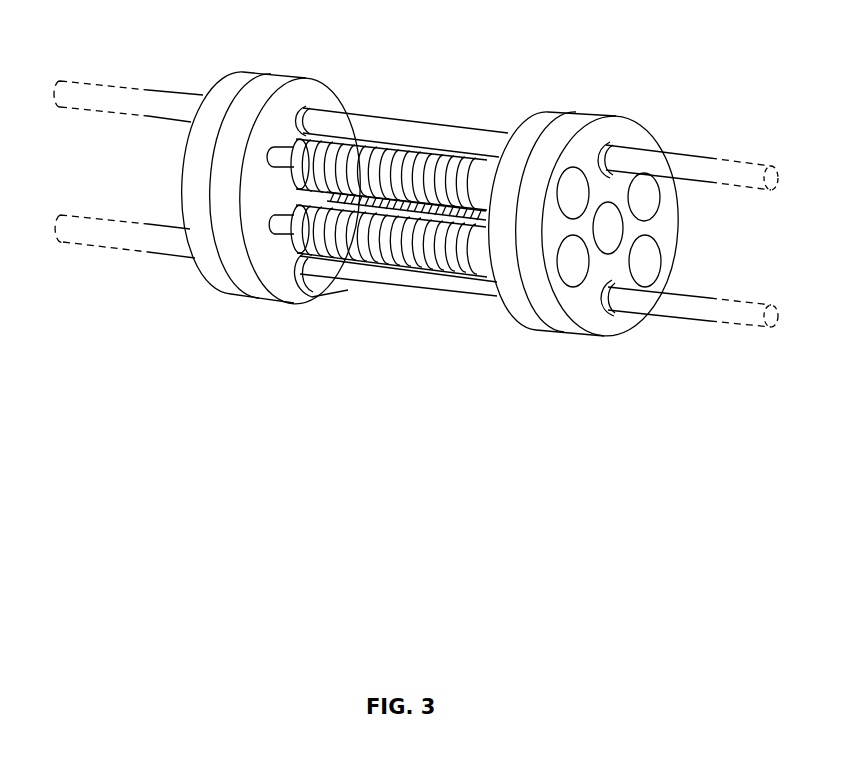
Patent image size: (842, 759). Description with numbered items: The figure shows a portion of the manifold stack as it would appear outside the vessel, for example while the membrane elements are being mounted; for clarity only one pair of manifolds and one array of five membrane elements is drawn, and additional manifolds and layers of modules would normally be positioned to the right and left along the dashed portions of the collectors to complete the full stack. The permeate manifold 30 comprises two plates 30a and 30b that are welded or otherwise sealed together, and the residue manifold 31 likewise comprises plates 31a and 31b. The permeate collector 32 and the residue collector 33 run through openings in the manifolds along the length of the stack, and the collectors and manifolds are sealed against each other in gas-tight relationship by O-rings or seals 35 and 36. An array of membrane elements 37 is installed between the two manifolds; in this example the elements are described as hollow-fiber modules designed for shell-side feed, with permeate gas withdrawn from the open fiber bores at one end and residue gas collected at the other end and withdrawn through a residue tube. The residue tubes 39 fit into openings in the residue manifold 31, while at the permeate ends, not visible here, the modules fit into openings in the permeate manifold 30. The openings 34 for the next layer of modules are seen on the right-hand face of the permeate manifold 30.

The permeate manifold 30 is at (586, 224).
The plate of permeate manifold 30a is at (568, 334).
The plate of permeate manifold 30b is at (535, 331).
The residue manifold 31 is at (274, 197).
The plate of residue manifold 31a is at (282, 300).
The plate of residue manifold 31b is at (240, 295).
The permeate collector 32 is at (683, 321).
The residue collector 33 is at (683, 153).
The openings 34 is at (662, 247).
The O-rings or seals 35 is at (326, 98).
The O-rings or seals 36 is at (322, 292).
The array of membrane elements 37 is at (428, 254).
The residue tubes 39 is at (267, 152).